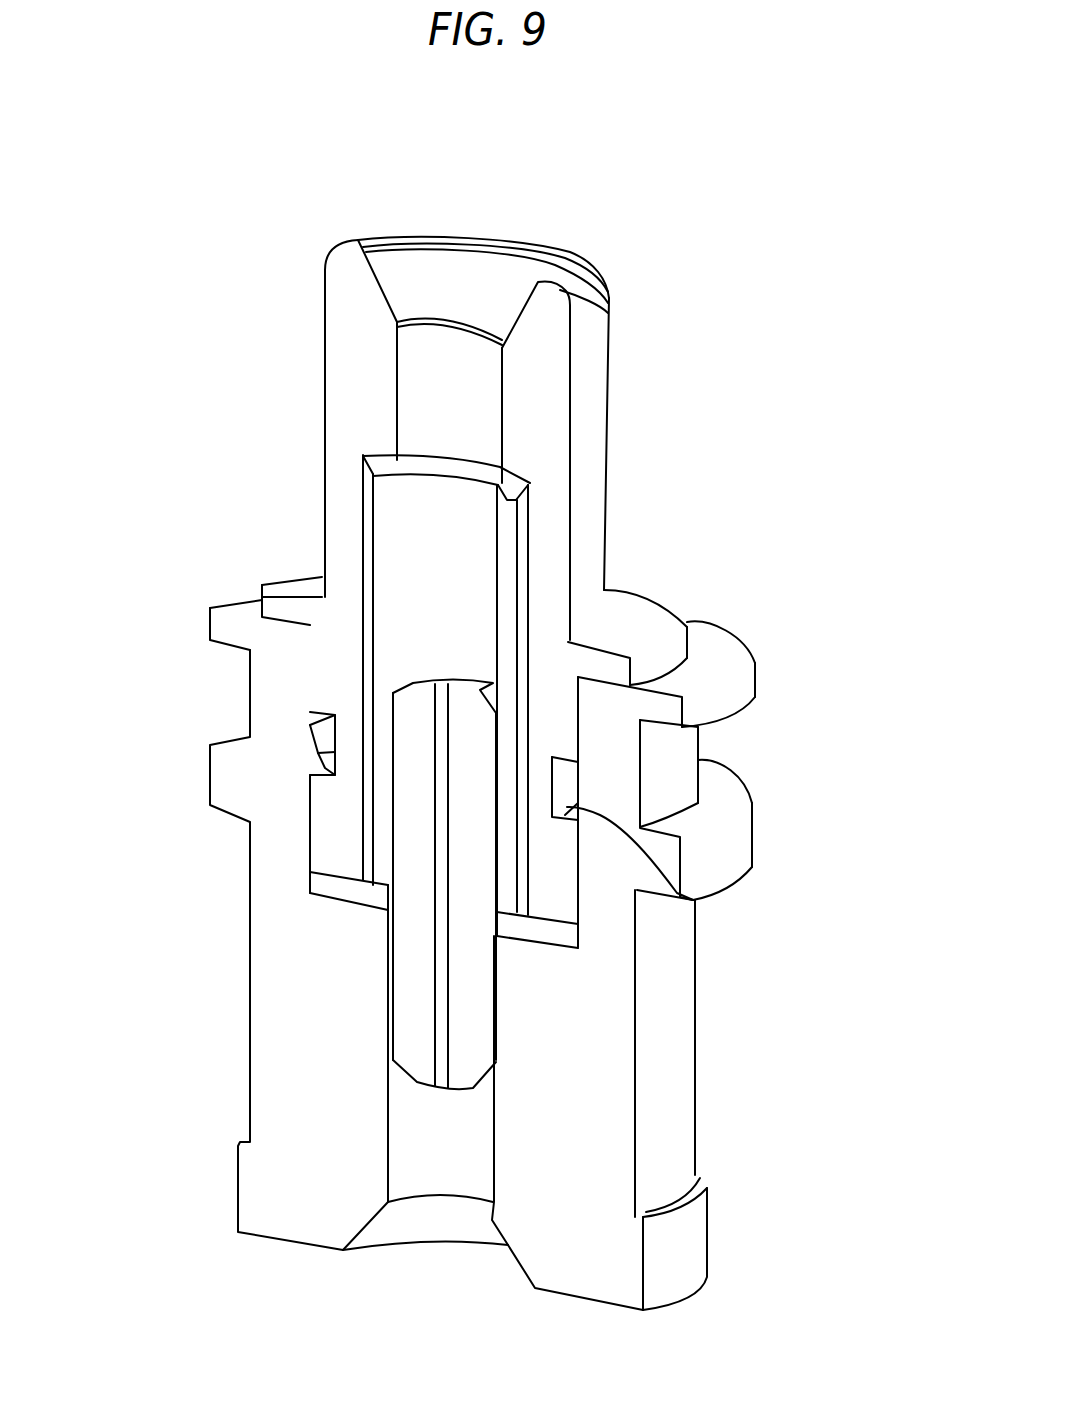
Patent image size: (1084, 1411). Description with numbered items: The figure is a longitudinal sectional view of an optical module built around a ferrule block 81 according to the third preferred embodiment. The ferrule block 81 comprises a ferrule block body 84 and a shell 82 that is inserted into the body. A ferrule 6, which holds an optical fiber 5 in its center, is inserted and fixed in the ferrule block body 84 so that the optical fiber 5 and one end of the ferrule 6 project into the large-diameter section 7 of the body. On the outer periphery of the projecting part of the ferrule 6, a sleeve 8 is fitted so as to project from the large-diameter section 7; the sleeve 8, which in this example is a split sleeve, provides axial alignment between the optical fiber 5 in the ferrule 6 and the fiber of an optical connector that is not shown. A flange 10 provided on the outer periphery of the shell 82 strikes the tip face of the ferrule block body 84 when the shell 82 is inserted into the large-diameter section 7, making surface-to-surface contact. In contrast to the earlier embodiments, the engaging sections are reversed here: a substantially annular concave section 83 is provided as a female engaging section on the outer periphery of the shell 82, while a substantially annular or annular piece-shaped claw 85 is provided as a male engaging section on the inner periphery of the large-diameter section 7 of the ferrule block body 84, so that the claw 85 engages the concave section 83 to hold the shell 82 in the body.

The ferrule block 81 is at (652, 371).
The shell 82 is at (607, 453).
The sleeve 8 is at (382, 520).
The flange 10 is at (645, 610).
The concave section 83 is at (567, 774).
The large-diameter section 7 is at (312, 824).
The claw 85 is at (693, 900).
The ferrule 6 is at (405, 968).
The ferrule block body 84 is at (697, 1002).
The optical fiber 5 is at (410, 1047).